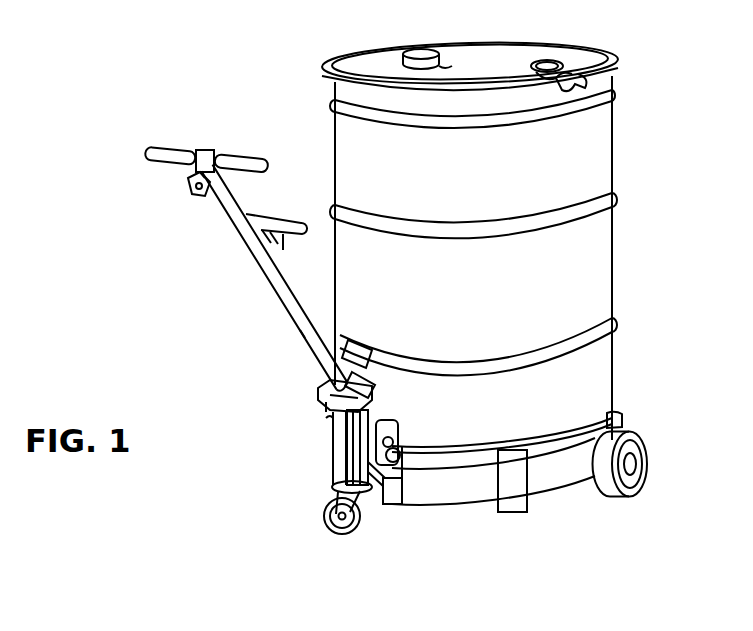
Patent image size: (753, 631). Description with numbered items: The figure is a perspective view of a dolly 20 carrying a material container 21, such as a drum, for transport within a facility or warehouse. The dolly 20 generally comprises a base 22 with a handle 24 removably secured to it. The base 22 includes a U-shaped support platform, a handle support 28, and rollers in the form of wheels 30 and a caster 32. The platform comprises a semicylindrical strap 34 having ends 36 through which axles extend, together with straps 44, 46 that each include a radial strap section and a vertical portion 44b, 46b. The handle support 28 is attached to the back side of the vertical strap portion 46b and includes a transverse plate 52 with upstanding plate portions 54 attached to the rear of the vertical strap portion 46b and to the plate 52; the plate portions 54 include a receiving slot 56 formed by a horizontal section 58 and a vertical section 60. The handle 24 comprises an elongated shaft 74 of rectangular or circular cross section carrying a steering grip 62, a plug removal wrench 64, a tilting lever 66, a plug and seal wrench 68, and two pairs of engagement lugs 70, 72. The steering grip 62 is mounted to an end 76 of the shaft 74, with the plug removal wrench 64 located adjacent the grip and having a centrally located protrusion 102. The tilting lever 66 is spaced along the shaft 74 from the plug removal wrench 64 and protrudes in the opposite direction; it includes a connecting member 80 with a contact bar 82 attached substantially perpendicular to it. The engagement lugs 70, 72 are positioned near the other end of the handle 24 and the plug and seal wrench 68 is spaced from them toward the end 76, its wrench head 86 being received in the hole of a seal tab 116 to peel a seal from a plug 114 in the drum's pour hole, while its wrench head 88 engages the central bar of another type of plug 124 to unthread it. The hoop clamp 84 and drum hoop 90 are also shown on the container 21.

The dolly 20 is at (300, 495).
The container 21 is at (620, 158).
The base 22 is at (528, 430).
The handle 24 is at (255, 278).
The handle support 28 is at (312, 511).
The wheels 30 is at (634, 450).
The caster 32 is at (353, 543).
The semicylindrical strap 34 is at (595, 422).
The ends 36 is at (620, 425).
The strap 44 is at (502, 518).
The vertical portion 44b is at (515, 476).
The strap 46 is at (408, 513).
The vertical portion 46b is at (402, 480).
The transverse plate 52 is at (383, 500).
The plate portions 54 is at (340, 458).
The receiving slot 56 is at (398, 438).
The horizontal section 58 is at (408, 451).
The vertical section 60 is at (380, 423).
The steering grip 62 is at (236, 150).
The plug removal wrench 64 is at (176, 207).
The tilting lever 66 is at (284, 214).
The plug and seal wrench 68 is at (307, 412).
The engagement lugs 70 is at (399, 443).
The engagement lugs 72 is at (430, 440).
The elongated shaft 74 is at (297, 330).
The end 76 is at (205, 160).
The connecting member 80 is at (284, 250).
The contact bar 82 is at (298, 223).
The hoop clamp 84 is at (362, 347).
The wrench head 86 is at (330, 408).
The wrench head 88 is at (325, 398).
The drum hoop 90 is at (371, 363).
The protrusion 102 is at (207, 196).
The plug 114 is at (412, 50).
The tab 116 is at (439, 66).
The plug 124 is at (558, 62).